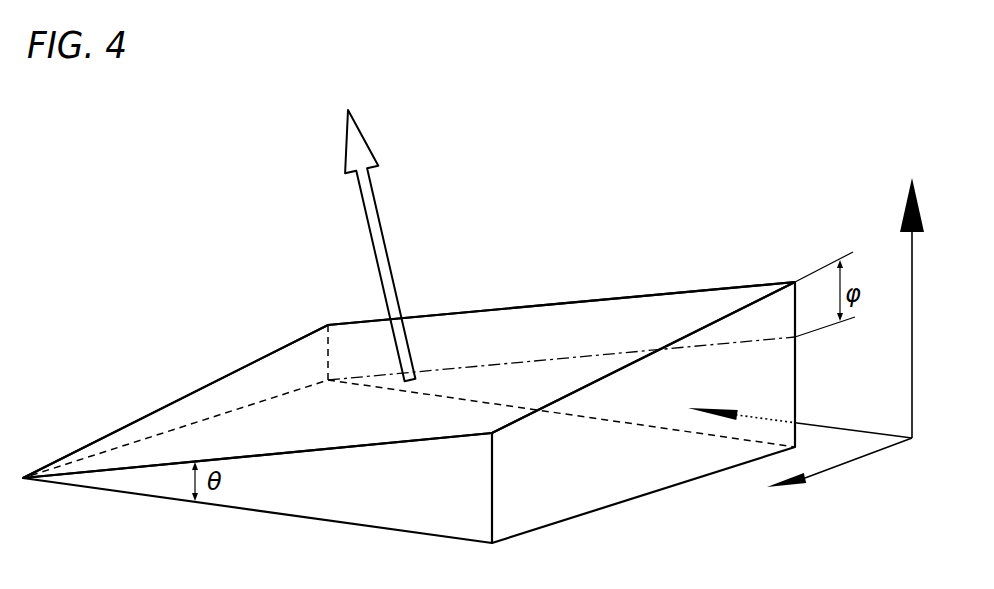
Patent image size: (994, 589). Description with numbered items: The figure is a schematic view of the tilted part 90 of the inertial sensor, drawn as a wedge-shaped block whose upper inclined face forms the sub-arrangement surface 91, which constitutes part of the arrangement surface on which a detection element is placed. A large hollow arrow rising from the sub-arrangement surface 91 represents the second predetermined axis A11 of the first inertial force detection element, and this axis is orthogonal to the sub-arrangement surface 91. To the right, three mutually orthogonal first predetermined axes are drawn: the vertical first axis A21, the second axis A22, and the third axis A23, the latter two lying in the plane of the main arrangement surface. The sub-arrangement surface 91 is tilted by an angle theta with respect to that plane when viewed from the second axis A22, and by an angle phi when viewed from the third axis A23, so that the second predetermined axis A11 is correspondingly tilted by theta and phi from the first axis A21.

The tilted part 90 is at (575, 502).
The sub-arrangement surface 91 is at (613, 309).
The second predetermined axis A11 is at (378, 232).
The first axis A21 is at (912, 327).
The second axis A22 is at (833, 465).
The third axis A23 is at (832, 427).